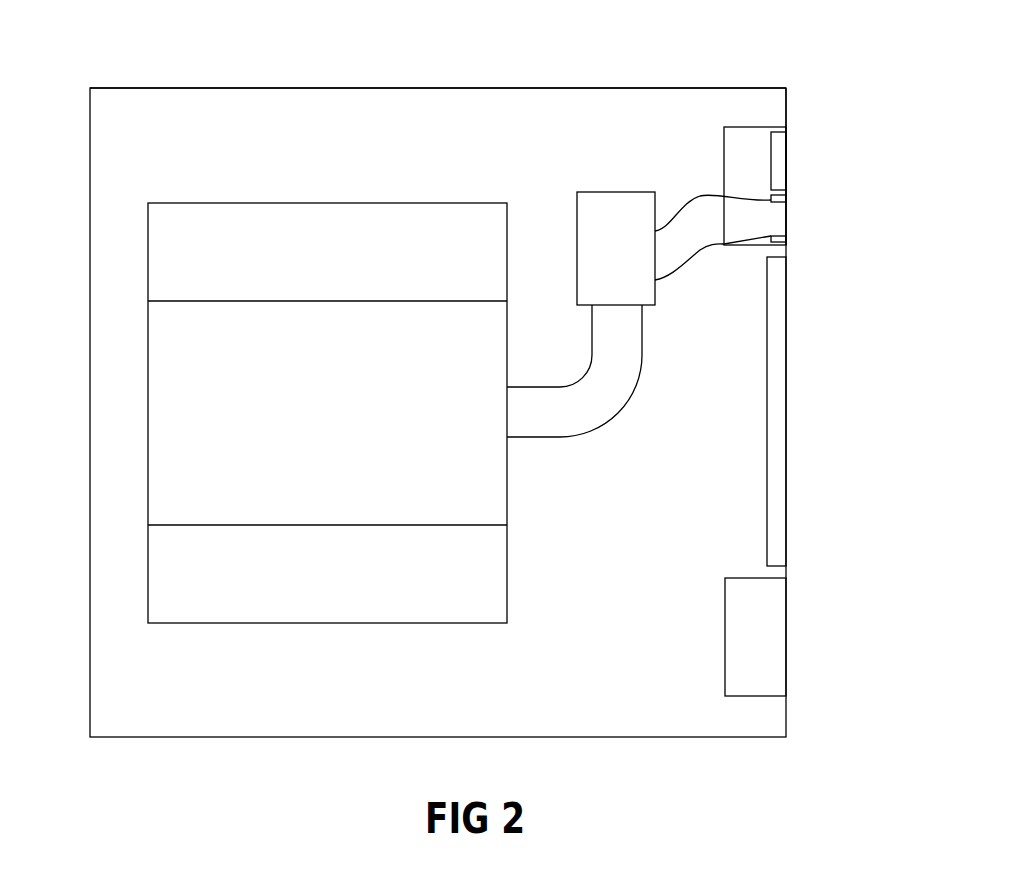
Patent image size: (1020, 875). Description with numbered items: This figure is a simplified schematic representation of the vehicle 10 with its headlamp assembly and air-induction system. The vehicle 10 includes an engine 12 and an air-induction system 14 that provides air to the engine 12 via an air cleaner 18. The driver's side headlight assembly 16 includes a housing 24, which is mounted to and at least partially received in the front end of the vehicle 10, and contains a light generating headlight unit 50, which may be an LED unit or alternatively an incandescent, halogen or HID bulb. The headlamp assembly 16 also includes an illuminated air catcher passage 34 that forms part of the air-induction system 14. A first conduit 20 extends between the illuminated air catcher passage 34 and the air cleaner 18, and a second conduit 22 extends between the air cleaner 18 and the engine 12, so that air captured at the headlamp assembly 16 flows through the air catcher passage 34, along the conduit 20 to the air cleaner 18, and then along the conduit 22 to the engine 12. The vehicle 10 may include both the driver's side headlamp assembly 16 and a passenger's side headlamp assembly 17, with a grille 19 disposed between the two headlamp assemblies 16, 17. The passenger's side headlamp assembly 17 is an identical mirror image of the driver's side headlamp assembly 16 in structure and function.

The vehicle 10 is at (453, 82).
The engine 12 is at (318, 222).
The air-induction system 14 is at (648, 138).
The headlight assembly 16 is at (753, 123).
The passenger's side headlamp assembly 17 is at (757, 697).
The air cleaner 18 is at (616, 192).
The grille 19 is at (777, 451).
The conduit 20 is at (697, 267).
The conduit 22 is at (612, 415).
The housing 24 is at (724, 138).
The illuminated air catcher passage 34 is at (746, 205).
The light generating headlight unit 50 is at (778, 141).